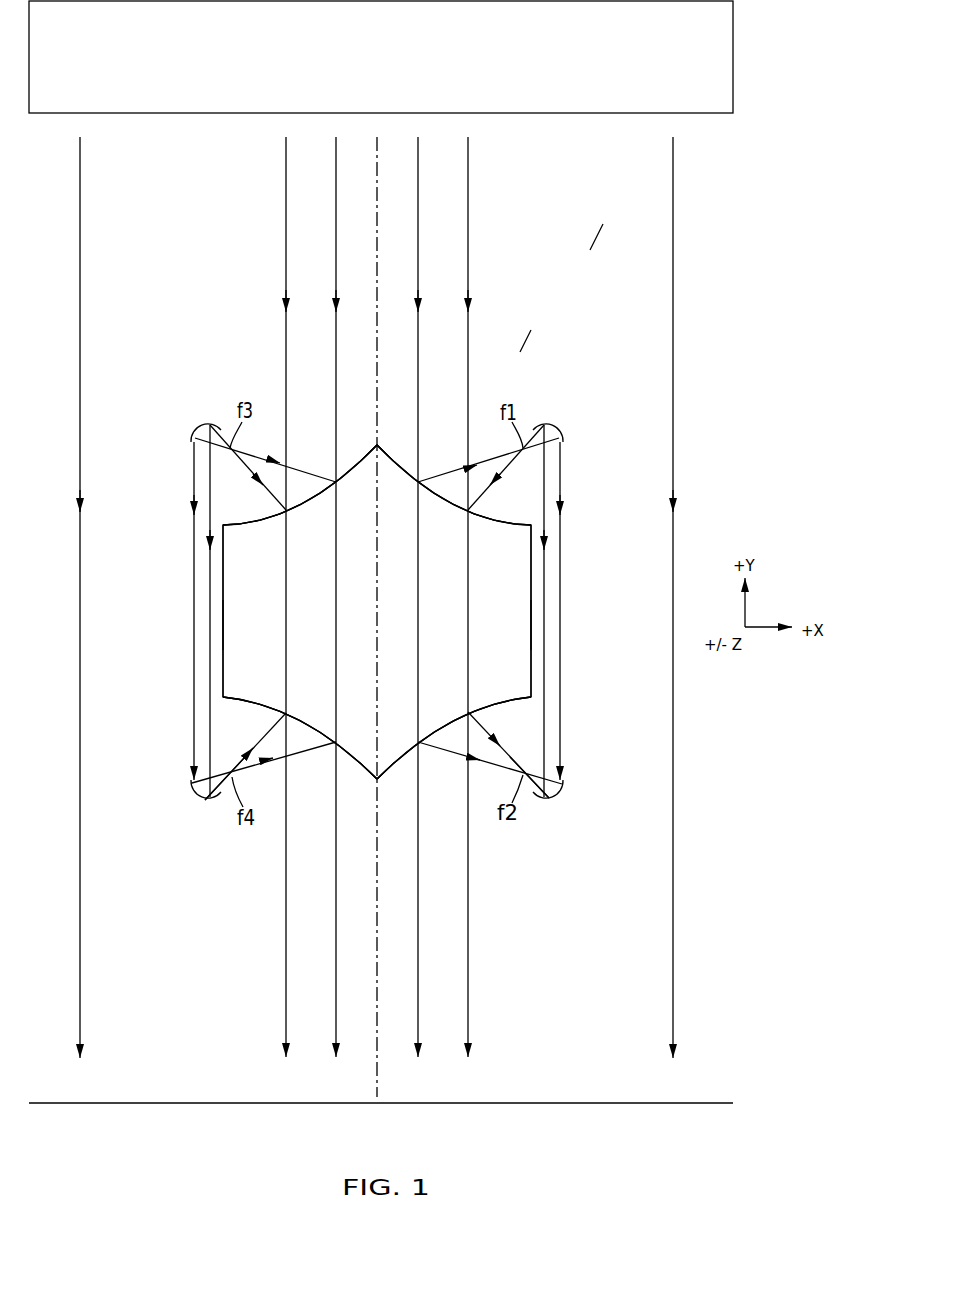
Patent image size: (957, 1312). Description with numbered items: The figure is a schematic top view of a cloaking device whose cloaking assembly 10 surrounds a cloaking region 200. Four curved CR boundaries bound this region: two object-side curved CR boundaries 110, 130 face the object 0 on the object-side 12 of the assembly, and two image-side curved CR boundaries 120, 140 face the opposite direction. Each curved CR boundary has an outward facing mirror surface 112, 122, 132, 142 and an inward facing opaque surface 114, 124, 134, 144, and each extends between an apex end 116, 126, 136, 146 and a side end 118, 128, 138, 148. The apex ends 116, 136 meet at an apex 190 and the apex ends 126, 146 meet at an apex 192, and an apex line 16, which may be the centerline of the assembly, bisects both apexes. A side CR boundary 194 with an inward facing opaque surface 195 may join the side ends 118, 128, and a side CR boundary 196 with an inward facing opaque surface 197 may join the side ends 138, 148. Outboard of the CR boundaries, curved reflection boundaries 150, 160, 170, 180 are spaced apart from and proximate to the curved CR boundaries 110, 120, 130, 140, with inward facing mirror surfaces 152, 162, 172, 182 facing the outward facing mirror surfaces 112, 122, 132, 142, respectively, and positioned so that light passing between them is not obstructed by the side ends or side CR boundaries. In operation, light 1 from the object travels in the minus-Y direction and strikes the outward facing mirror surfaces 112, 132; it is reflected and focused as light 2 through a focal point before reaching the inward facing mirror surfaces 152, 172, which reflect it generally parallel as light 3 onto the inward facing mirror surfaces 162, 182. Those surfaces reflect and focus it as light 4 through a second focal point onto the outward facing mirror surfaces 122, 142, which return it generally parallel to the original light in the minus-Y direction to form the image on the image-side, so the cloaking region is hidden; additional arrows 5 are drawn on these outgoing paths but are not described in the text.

The object 0 is at (659, 66).
The light from the object 1 is at (286, 258).
The reflected light 2 is at (300, 470).
The reflected light 3 is at (194, 613).
The reflected light 4 is at (303, 752).
The section line 5- 5 is at (336, 973).
The cloaking assembly 10 is at (603, 224).
The object-side 12 is at (531, 330).
The apex line 16 is at (378, 234).
The object-side curved CR boundary 110 is at (437, 512).
The outward facing mirror surface 112 is at (490, 515).
The inward facing opaque surface 114 is at (413, 484).
The apex end 116 is at (392, 457).
The side end 118 is at (527, 528).
The image-side curved CR boundary 120 is at (437, 712).
The outward facing mirror surface 122 is at (491, 717).
The inward facing opaque surface 124 is at (409, 740).
The apex end 126 is at (392, 768).
The side end 128 is at (519, 695).
The object-side curved CR boundary 130 is at (317, 512).
The outward facing mirror surface 132 is at (263, 515).
The inward facing opaque surface 134 is at (341, 484).
The apex end 136 is at (362, 457).
The side end 138 is at (227, 528).
The image-side curved CR boundary 140 is at (317, 712).
The outward facing mirror surface 142 is at (263, 717).
The inward facing opaque surface 144 is at (345, 740).
The apex end 146 is at (362, 768).
The side end 148 is at (235, 693).
The object-side curved reflection boundary 150 is at (547, 423).
The inward facing mirror surface 152 is at (565, 458).
The image-side curved reflection boundary 160 is at (550, 802).
The inward facing mirror surface 162 is at (565, 772).
The object-side curved reflection boundary 170 is at (207, 423).
The inward facing mirror surface 172 is at (190, 453).
The image-side curved reflection boundary 180 is at (204, 802).
The inward facing mirror surface 182 is at (190, 768).
The apex 190 is at (378, 444).
The apex 192 is at (378, 781).
The side CR boundary 194 is at (530, 638).
The inward facing opaque surface 195 is at (528, 613).
The side CR boundary 196 is at (224, 638).
The inward facing opaque surface 197 is at (225, 613).
The cloaking region 200 is at (400, 617).